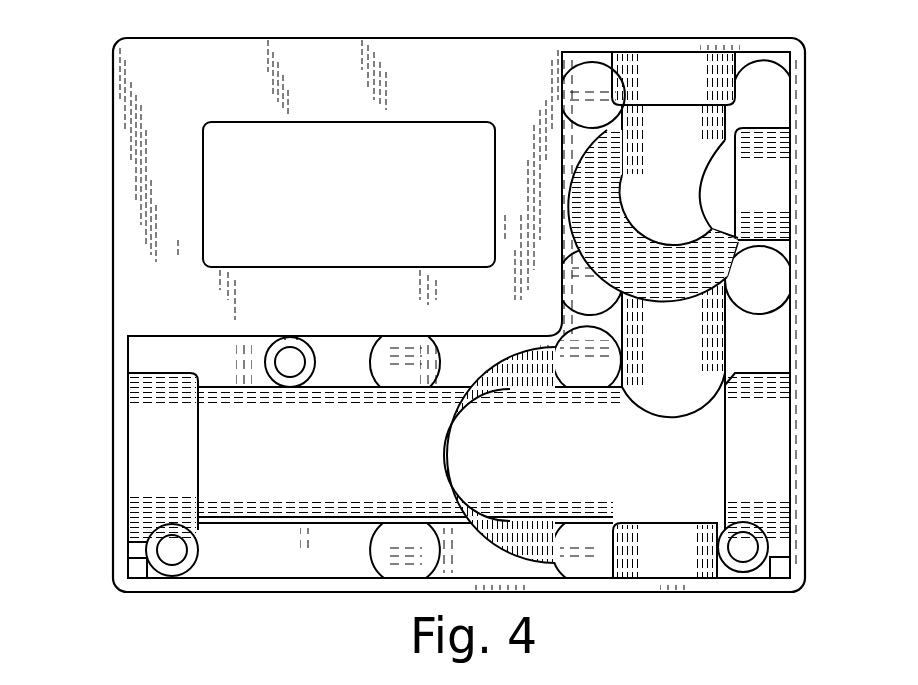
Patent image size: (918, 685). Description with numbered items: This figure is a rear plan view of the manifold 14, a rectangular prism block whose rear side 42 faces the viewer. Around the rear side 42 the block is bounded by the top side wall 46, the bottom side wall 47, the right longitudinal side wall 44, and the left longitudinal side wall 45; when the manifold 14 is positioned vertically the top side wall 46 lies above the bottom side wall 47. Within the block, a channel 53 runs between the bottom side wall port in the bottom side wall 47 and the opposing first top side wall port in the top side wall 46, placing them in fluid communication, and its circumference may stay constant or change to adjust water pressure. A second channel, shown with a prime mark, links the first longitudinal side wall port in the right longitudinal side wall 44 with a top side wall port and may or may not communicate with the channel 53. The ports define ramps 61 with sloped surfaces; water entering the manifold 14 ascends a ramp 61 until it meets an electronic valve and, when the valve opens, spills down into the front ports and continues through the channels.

The manifold 14 is at (30, 95).
The rear side 42 is at (130, 233).
The right longitudinal side wall 44 is at (767, 47).
The left longitudinal side wall 45 is at (665, 582).
The top side wall 46 is at (800, 318).
The bottom side wall 47 is at (121, 446).
The channel 53 is at (266, 516).
The ramp 61 is at (613, 215).